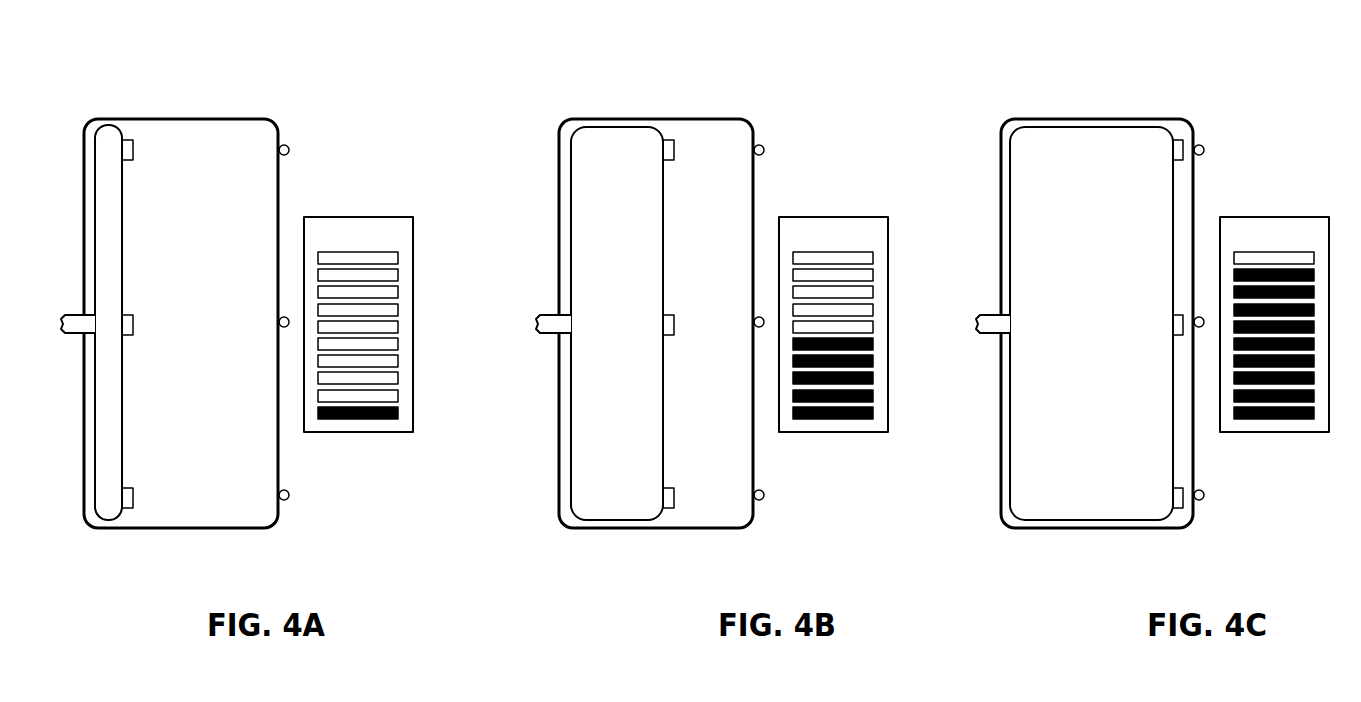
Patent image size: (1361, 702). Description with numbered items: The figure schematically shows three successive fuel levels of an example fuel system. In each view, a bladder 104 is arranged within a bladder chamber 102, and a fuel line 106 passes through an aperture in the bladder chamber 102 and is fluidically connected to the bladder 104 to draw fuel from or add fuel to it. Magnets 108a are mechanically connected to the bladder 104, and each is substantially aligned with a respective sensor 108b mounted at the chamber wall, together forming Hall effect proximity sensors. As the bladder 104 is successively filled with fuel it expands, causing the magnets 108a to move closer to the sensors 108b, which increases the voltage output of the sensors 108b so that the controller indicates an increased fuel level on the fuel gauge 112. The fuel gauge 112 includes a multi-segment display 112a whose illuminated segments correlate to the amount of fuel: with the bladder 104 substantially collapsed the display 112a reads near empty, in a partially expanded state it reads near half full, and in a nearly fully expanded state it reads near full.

In FIG. 4A, the bladder chamber 102 is at (218, 118).
In FIG. 4B, the bladder chamber 102 is at (695, 118).
In FIG. 4C, the bladder chamber 102 is at (1133, 118).
In FIG. 4A, the bladder 104 is at (103, 130).
In FIG. 4B, the bladder 104 is at (582, 140).
In FIG. 4C, the bladder 104 is at (1018, 138).
In FIG. 4A, the fuel line 106 is at (78, 313).
In FIG. 4B, the fuel line 106 is at (552, 313).
In FIG. 4C, the fuel line 106 is at (993, 313).
In FIG. 4A, the magnet 108a is at (133, 160).
In FIG. 4B, the magnet 108a is at (675, 162).
In FIG. 4C, the magnet 108a is at (1174, 497).
In FIG. 4A, the sensor 108b is at (283, 491).
In FIG. 4B, the sensor 108b is at (758, 491).
In FIG. 4C, the sensor 108b is at (1200, 318).
In FIG. 4A, the fuel gauge 112 is at (412, 217).
In FIG. 4B, the fuel gauge 112 is at (887, 217).
In FIG. 4C, the fuel gauge 112 is at (1255, 218).
In FIG. 4A, the display 112a is at (398, 344).
In FIG. 4B, the display 112a is at (873, 340).
In FIG. 4C, the display 112a is at (1248, 418).